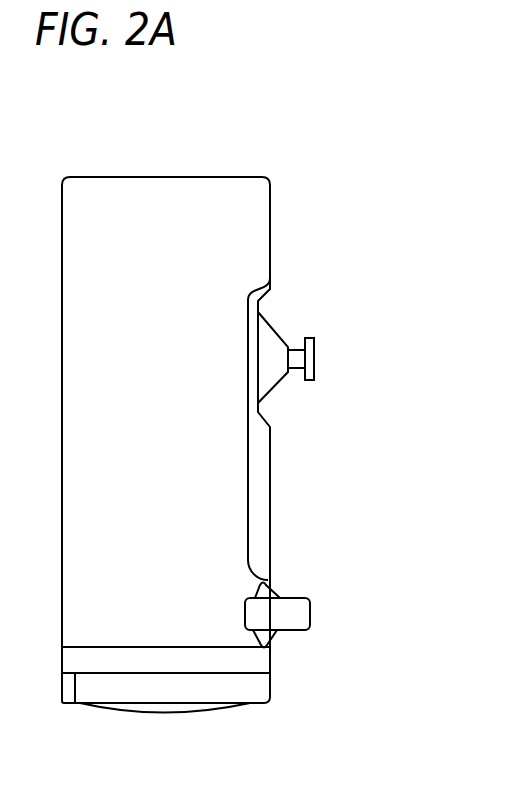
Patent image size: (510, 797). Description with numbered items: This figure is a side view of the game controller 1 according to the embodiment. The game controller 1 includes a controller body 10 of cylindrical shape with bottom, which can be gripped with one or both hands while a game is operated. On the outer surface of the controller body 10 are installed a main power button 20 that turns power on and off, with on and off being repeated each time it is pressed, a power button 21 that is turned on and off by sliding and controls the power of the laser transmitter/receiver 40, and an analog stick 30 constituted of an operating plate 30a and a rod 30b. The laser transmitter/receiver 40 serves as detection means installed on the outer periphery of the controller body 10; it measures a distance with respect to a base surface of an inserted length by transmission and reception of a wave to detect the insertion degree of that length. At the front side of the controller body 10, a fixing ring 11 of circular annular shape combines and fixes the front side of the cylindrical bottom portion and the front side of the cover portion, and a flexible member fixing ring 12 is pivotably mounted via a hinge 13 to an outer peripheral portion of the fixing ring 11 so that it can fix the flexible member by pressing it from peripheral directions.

The game controller 1 is at (258, 121).
The controller body 10 is at (270, 500).
The fixing ring 11 is at (270, 662).
The flexible member fixing ring 12 is at (270, 688).
The hinge 13 is at (60, 687).
The main power button 20 is at (270, 462).
The power button 21 is at (270, 557).
The analog stick 30 is at (352, 352).
The operating plate 30a is at (315, 343).
The rod 30b is at (291, 347).
The laser transmitter/receiver 40 is at (310, 612).